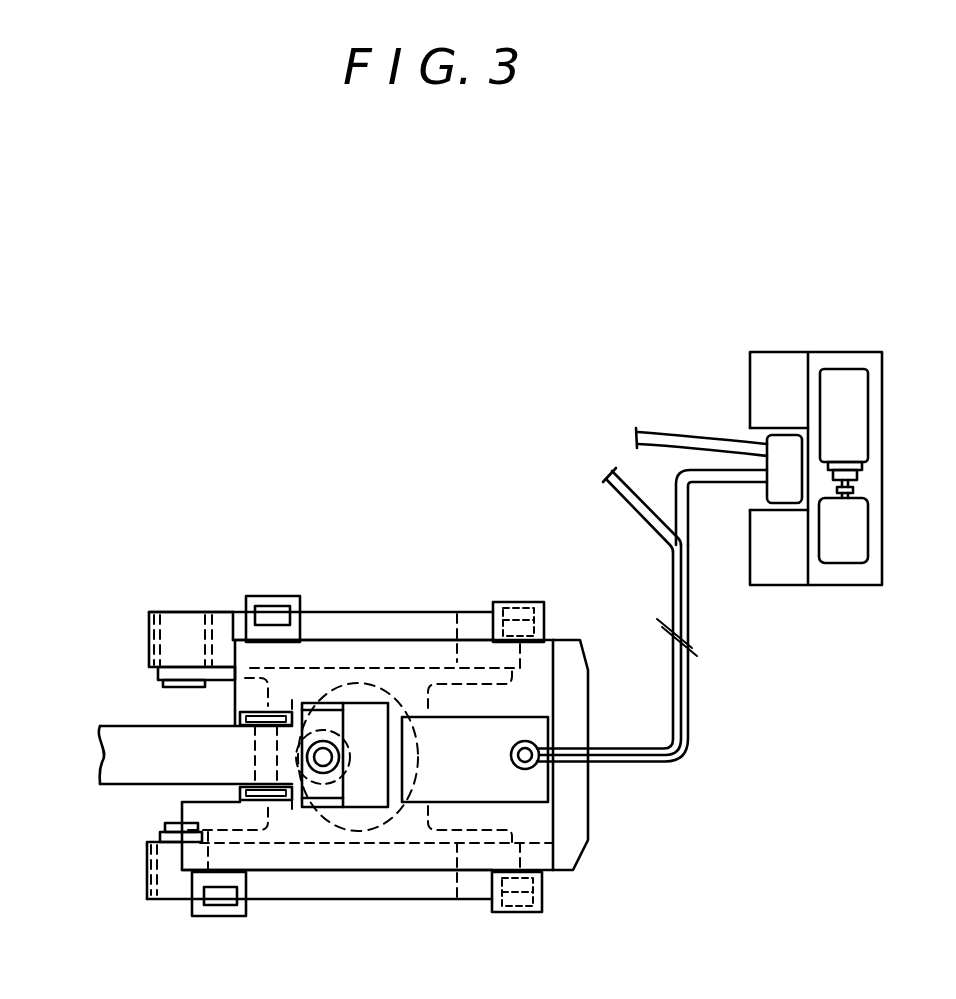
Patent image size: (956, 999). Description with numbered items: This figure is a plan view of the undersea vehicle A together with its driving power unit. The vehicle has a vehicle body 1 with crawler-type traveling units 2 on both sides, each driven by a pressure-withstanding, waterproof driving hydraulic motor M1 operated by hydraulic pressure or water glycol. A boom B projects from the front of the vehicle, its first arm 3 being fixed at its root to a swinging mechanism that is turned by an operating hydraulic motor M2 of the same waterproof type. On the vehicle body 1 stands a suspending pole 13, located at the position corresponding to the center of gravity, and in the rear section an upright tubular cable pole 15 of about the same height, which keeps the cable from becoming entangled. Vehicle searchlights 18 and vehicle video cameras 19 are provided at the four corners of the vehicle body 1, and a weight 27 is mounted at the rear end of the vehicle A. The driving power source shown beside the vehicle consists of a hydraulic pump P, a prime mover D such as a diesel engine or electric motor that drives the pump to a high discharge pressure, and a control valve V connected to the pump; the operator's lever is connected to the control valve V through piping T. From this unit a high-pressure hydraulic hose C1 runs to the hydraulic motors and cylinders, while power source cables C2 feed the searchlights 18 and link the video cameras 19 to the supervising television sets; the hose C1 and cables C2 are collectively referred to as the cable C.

The vehicle body 1 is at (232, 650).
The traveling unit 2 is at (432, 612).
The first arm 3 is at (107, 785).
The suspending pole 13 is at (306, 757).
The tubular cable pole 15 is at (525, 745).
The vehicle searchlight 18 is at (532, 598).
The vehicle video camera 19 is at (286, 597).
The weight 27 is at (589, 812).
The undersea vehicle A is at (378, 611).
The boom B is at (98, 725).
The cable C is at (690, 714).
The high-pressure hydraulic hose C1 is at (693, 525).
The power source cable C2 is at (630, 498).
The prime mover D is at (830, 369).
The driving hydraulic motor M1 is at (175, 689).
The operating hydraulic motor M2 is at (347, 772).
The hydraulic pump P is at (834, 556).
The piping T is at (692, 435).
The control valve V is at (765, 488).